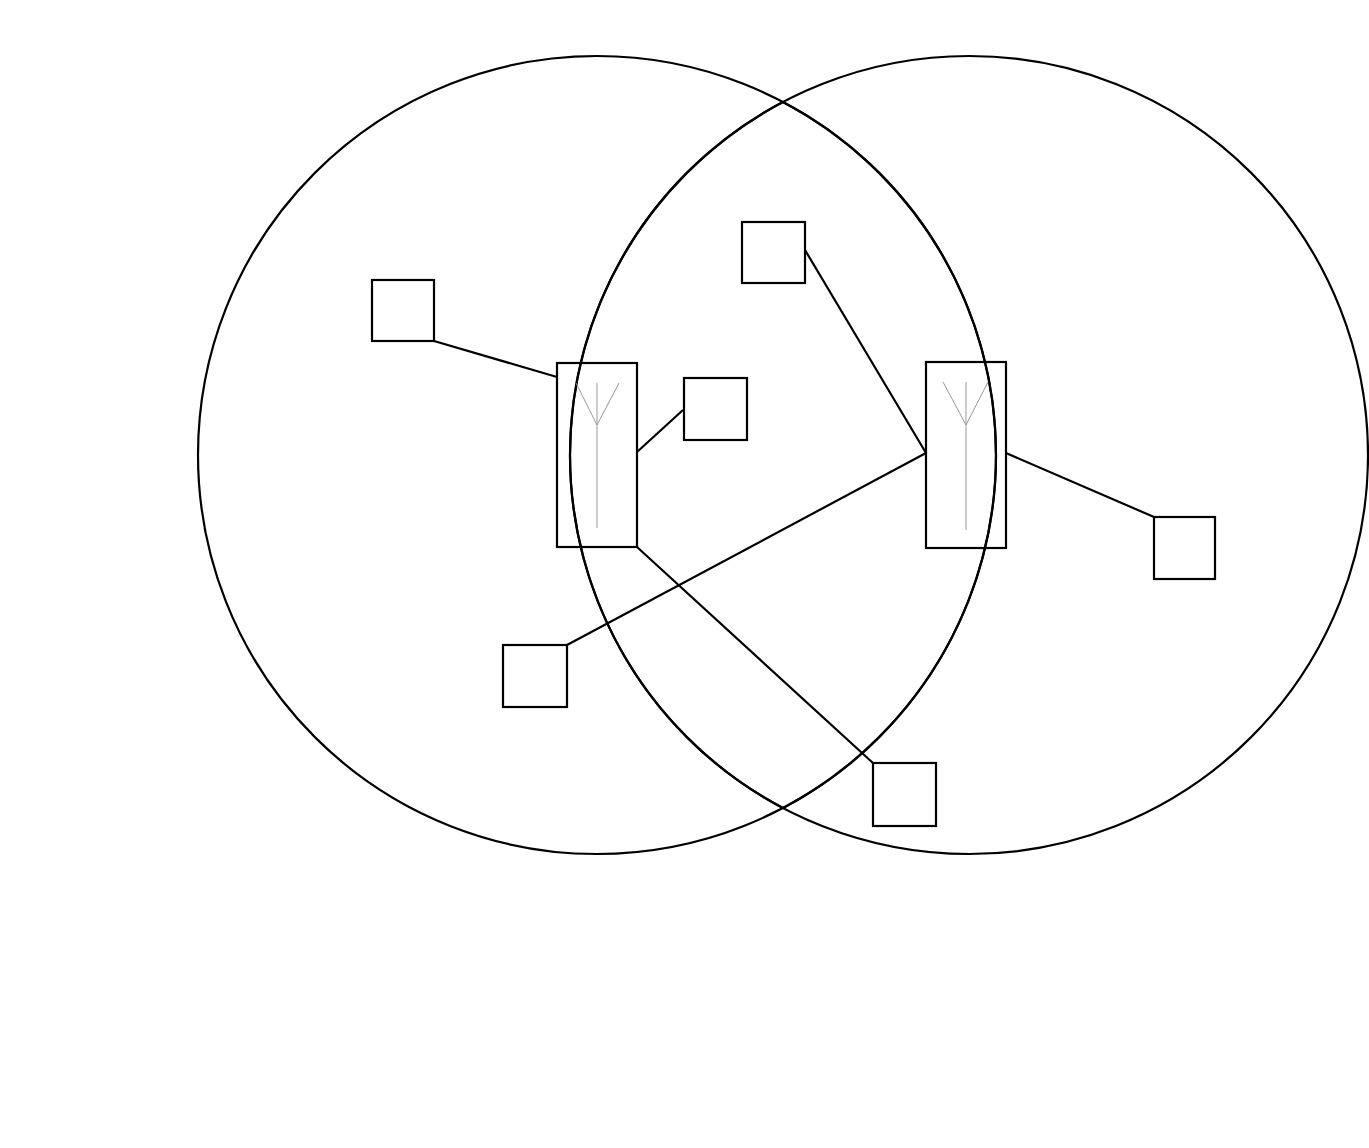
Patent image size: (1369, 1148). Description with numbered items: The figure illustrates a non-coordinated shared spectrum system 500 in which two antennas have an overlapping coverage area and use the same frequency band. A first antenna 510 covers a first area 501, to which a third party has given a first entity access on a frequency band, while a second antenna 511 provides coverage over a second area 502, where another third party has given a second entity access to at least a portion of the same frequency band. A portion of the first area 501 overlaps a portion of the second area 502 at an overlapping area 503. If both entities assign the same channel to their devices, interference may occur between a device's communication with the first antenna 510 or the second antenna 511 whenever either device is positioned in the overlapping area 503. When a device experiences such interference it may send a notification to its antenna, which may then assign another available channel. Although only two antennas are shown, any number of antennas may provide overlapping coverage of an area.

The wireless communication system 500 is at (90, 901).
The first area 501 is at (358, 160).
The second area 502 is at (848, 76).
The overlapping area 503 is at (665, 228).
The first antenna 510 is at (557, 530).
The second antenna 511 is at (926, 420).